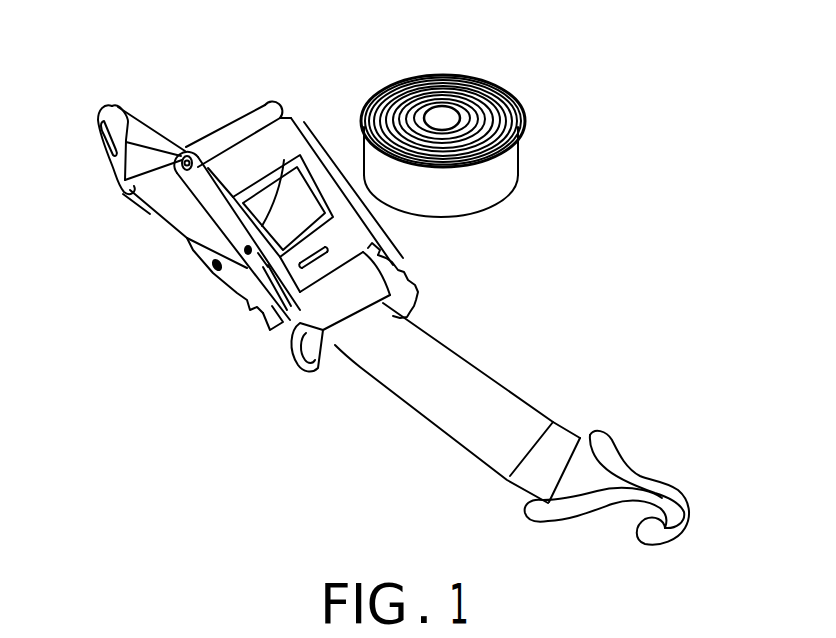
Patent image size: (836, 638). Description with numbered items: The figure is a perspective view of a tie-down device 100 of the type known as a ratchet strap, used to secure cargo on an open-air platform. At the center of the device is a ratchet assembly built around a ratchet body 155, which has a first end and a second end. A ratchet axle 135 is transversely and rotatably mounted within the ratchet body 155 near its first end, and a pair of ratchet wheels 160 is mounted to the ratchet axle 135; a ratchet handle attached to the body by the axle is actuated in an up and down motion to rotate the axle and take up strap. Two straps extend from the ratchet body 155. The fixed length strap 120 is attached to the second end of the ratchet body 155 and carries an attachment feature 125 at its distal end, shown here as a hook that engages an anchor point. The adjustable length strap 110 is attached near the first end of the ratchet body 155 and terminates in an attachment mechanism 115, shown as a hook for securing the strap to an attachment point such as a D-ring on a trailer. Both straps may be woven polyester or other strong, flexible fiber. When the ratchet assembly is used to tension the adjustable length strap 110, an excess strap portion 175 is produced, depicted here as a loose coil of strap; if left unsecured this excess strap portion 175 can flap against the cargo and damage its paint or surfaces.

The tie-down device 100 is at (697, 66).
The adjustable length strap 110 is at (487, 397).
The attachment mechanism 115 is at (670, 493).
The fixed length strap 120 is at (170, 216).
The attachment feature 125 is at (110, 106).
The ratchet axle 135 is at (343, 320).
The ratchet body 155 is at (265, 312).
The ratchet wheels 160 is at (400, 270).
The excess strap portion 175 is at (513, 165).